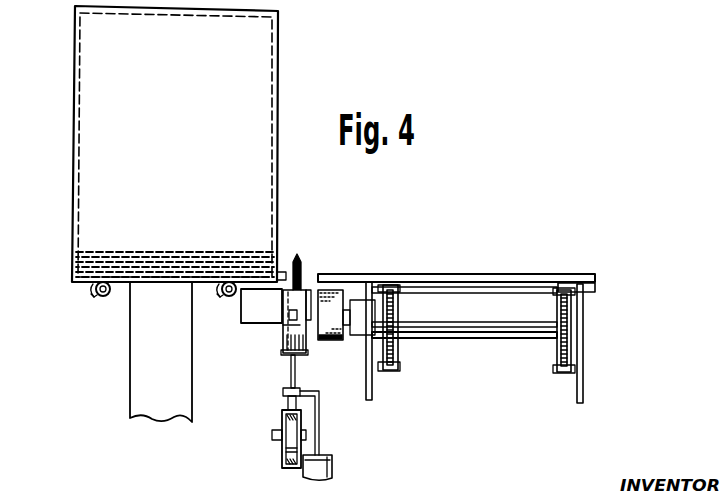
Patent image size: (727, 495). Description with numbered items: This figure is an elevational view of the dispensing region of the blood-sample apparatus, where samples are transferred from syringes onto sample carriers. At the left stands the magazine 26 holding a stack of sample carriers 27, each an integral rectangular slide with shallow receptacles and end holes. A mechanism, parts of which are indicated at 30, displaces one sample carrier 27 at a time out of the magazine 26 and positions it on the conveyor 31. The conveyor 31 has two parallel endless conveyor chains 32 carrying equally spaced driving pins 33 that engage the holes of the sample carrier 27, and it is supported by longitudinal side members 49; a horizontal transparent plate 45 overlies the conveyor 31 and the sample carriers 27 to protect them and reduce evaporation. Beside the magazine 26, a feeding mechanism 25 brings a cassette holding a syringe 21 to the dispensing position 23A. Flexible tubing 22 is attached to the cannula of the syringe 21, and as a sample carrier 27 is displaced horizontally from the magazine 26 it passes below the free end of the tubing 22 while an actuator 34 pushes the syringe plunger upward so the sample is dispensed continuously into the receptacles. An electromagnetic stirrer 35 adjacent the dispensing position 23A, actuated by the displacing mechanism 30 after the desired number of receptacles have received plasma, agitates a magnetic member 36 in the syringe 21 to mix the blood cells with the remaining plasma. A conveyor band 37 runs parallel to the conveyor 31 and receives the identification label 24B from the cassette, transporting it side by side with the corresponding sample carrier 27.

The syringe 21 is at (304, 290).
The flexible tubing 22 is at (299, 263).
The dispensing position 23A is at (289, 352).
The identification label 24B is at (333, 290).
The feeding mechanism 25 is at (282, 459).
The magazine 26 is at (90, 141).
The sample carrier 27 is at (105, 250).
The displacing mechanism 30 is at (109, 297).
The conveyor 31 is at (450, 350).
The conveyor chains 32 is at (397, 363).
The driving pins 33 is at (565, 288).
The actuator 34 is at (332, 466).
The electromagnetic stirrer 35 is at (254, 318).
The magnetic member 36 is at (282, 331).
The conveyor band 37 is at (323, 340).
The plate 45 is at (418, 276).
The longitudinal side members 49 is at (585, 318).